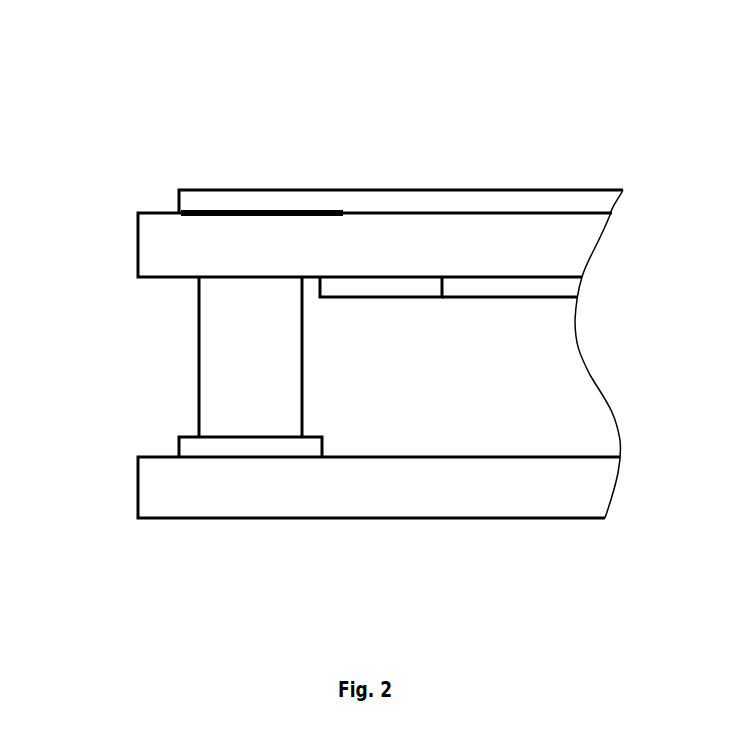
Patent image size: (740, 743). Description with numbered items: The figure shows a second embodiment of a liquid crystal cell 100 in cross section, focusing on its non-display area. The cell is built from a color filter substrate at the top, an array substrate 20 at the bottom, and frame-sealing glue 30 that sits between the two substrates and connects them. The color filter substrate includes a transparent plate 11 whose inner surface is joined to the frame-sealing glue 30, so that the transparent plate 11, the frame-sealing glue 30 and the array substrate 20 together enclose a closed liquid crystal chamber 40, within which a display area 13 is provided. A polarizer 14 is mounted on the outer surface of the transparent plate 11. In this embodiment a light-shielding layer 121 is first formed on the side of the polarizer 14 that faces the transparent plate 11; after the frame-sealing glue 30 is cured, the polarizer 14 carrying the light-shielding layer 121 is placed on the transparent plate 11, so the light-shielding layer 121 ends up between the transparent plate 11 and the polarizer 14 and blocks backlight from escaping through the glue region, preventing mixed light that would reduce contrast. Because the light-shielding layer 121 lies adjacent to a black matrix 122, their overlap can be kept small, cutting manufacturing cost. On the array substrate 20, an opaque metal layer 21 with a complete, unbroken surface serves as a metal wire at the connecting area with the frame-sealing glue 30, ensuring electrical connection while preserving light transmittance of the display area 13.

The liquid crystal cell 100 is at (388, 168).
The transparent plate 11 is at (157, 250).
The light-shielding layer 121 is at (215, 208).
The polarizer 14 is at (278, 203).
The black matrix 122 is at (412, 285).
The display area 13 is at (505, 285).
The frame-sealing glue 30 is at (217, 353).
The metal layer 21 is at (192, 450).
The array substrate 20 is at (280, 495).
The liquid crystal chamber 40 is at (497, 397).